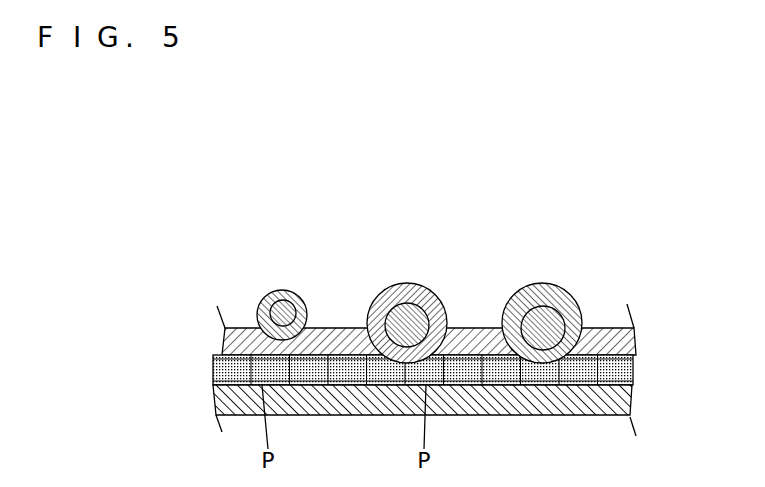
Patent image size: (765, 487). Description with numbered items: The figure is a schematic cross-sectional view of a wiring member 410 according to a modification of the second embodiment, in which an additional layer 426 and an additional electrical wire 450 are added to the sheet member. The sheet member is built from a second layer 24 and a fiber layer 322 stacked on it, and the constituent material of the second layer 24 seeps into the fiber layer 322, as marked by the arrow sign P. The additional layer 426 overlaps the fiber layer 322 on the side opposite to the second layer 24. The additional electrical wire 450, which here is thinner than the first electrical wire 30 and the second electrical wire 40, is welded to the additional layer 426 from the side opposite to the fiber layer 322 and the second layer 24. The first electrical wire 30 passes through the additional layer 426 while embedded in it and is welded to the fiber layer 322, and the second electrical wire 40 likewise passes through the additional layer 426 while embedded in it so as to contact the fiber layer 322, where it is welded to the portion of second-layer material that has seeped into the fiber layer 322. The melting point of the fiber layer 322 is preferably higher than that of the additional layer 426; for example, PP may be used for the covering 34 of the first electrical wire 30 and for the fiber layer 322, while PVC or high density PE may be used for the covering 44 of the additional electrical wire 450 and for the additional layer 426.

The wiring member 410 is at (457, 339).
The additional layer 426 is at (240, 327).
The additional electrical wire 450 is at (283, 289).
The first electrical wire 30 is at (379, 296).
The covering 34 is at (437, 296).
The second electrical wire 40 is at (566, 292).
The covering 44 is at (583, 317).
The fiber layer 322 is at (636, 377).
The second layer 24 is at (605, 417).